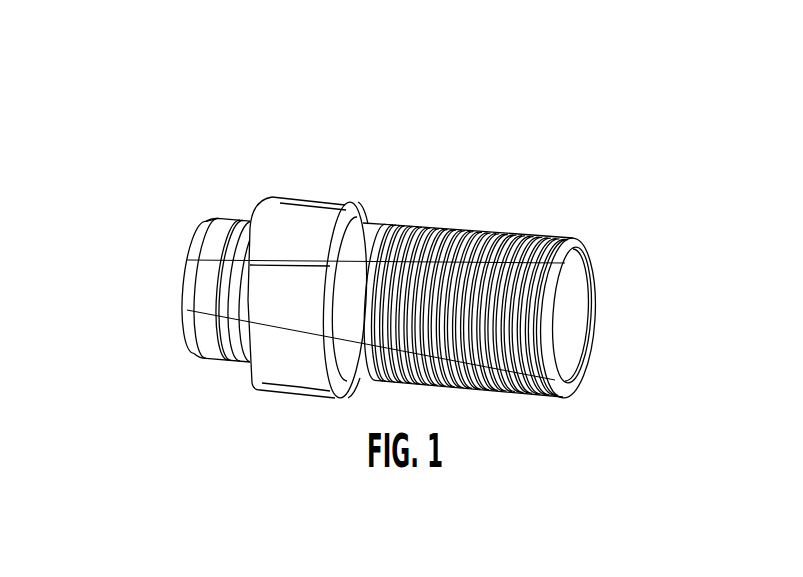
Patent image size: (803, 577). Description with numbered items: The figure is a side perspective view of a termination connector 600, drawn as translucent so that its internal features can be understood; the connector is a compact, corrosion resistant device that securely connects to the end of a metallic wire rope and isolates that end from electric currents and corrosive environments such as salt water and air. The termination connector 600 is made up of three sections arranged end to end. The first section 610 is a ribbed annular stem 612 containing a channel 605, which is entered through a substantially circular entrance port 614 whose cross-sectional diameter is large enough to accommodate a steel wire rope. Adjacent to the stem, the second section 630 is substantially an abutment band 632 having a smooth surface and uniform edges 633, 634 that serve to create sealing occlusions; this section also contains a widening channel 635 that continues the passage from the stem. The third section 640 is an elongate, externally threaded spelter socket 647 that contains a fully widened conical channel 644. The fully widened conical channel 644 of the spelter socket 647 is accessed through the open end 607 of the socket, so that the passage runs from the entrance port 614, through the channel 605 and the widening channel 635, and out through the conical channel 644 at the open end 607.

The termination connector 600 is at (140, 100).
The channel 605 is at (167, 268).
The open end 607 is at (575, 317).
The first section 610 is at (195, 373).
The ribbed annular stem 612 is at (213, 215).
The entrance port 614 is at (192, 335).
The second section 630 is at (332, 182).
The abutment band 632 is at (292, 223).
The uniform edge 633 is at (245, 363).
The uniform edge 634 is at (358, 207).
The widening channel 635 is at (275, 320).
The third section 640 is at (523, 210).
The fully widened conical channel 644 is at (552, 400).
The spelter socket 647 is at (533, 243).